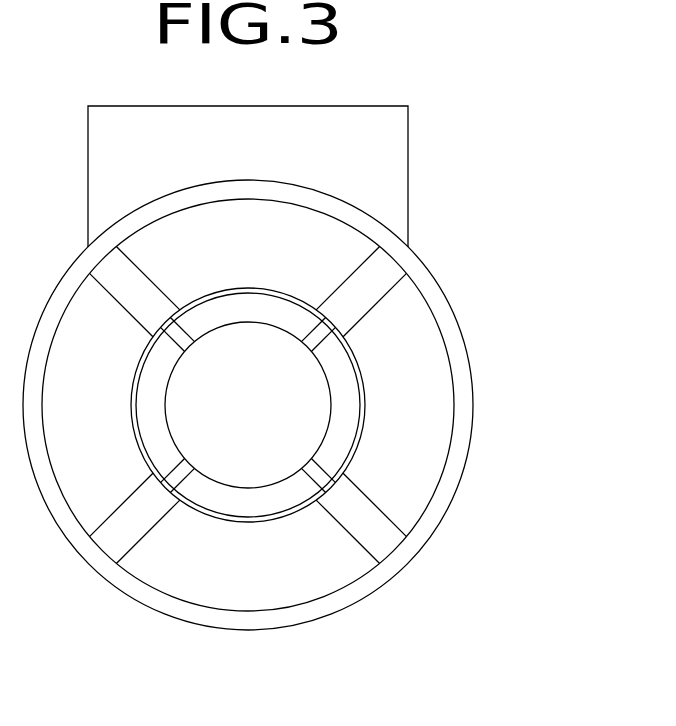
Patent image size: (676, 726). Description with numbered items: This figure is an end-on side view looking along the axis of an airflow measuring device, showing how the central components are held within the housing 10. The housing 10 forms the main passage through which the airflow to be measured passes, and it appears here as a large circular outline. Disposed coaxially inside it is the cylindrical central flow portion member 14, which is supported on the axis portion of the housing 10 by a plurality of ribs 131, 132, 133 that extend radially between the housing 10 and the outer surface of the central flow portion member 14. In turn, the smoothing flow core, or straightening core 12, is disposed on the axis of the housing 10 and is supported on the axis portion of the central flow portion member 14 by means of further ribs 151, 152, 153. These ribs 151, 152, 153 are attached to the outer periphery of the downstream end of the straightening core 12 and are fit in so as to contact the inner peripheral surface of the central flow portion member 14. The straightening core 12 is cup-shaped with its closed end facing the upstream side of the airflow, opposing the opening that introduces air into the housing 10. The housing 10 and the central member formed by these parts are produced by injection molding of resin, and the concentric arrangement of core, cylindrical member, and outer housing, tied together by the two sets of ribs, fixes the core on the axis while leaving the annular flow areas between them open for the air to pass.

The housing 10 is at (474, 422).
The straightening core 12 is at (320, 403).
The central flow portion member 14 is at (133, 392).
The rib 131 is at (377, 288).
The rib 132 is at (377, 523).
The third rib 133 is at (132, 538).
The rib 151 is at (310, 337).
The rib 152 is at (313, 467).
The third connecting portion 153 is at (180, 469).